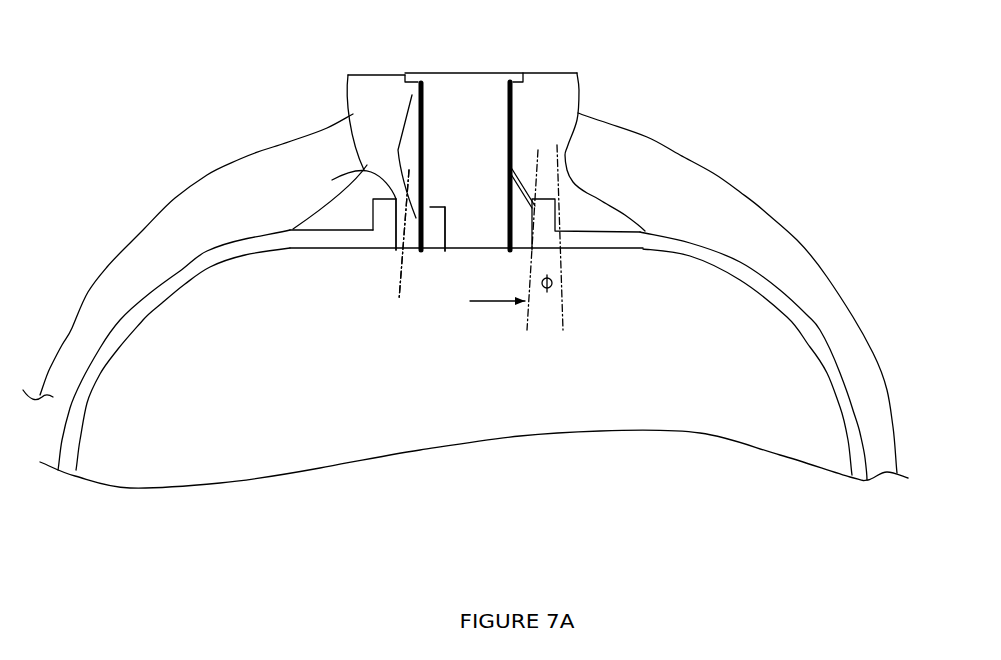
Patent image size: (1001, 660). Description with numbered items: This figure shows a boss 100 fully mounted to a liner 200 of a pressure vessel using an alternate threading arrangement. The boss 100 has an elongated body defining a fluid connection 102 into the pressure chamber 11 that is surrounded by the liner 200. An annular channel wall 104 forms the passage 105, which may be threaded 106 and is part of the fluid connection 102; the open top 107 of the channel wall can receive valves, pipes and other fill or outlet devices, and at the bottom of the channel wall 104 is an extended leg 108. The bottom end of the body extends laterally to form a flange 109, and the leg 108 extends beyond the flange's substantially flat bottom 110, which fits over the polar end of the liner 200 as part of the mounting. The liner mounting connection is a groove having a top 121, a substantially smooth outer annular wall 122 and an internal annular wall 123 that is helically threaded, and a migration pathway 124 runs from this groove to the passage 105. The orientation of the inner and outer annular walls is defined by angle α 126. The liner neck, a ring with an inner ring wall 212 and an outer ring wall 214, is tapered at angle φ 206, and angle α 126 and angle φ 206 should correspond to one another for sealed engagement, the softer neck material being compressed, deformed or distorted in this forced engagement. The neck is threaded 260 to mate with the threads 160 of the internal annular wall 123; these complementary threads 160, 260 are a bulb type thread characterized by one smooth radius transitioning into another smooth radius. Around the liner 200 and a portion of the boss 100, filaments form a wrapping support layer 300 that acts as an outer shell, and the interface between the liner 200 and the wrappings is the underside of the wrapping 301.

The pressure chamber 11 is at (216, 369).
The boss 100 is at (488, 202).
The fluid connection 102 is at (467, 62).
The annular channel wall 104 is at (398, 150).
The passage 105 is at (444, 195).
The threads of the passage 106 is at (433, 172).
The open top of the channel wall 107 is at (407, 72).
The extended leg 108 is at (445, 230).
The flange 109 is at (288, 222).
The flange bottom 110 is at (341, 229).
The top of the LMC groove 121 is at (356, 185).
The outer annular wall of the LMC groove 122 is at (565, 212).
The internal annular wall of the LMC groove 123 is at (415, 242).
The migration pathway 124 is at (502, 173).
The angle α 126 is at (538, 167).
The threads of the internal annular wall 160 is at (399, 300).
The neck threads 260 is at (404, 235).
The liner 200 is at (310, 245).
The angle φ 206 is at (567, 299).
The inner ring wall 212 is at (392, 232).
The outer ring wall 214 is at (548, 222).
The wrapping support layer 300 is at (261, 165).
The underside of the wrapping 301 is at (658, 233).